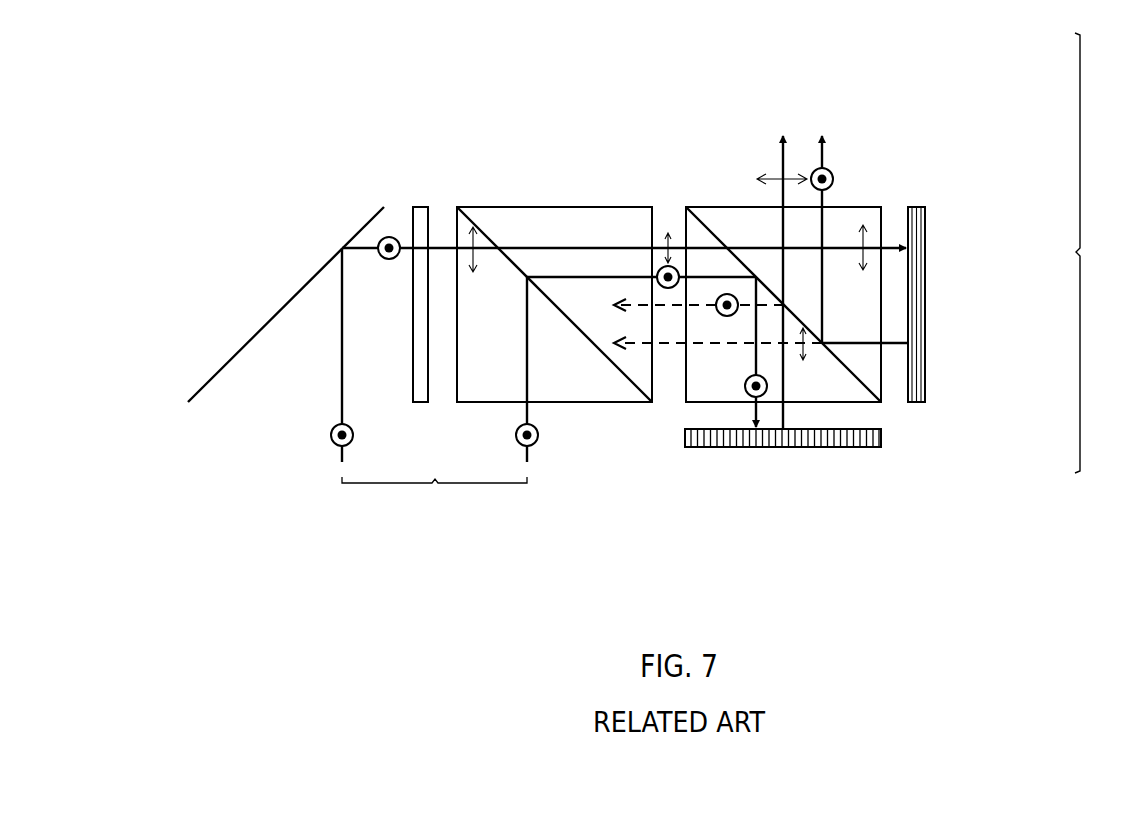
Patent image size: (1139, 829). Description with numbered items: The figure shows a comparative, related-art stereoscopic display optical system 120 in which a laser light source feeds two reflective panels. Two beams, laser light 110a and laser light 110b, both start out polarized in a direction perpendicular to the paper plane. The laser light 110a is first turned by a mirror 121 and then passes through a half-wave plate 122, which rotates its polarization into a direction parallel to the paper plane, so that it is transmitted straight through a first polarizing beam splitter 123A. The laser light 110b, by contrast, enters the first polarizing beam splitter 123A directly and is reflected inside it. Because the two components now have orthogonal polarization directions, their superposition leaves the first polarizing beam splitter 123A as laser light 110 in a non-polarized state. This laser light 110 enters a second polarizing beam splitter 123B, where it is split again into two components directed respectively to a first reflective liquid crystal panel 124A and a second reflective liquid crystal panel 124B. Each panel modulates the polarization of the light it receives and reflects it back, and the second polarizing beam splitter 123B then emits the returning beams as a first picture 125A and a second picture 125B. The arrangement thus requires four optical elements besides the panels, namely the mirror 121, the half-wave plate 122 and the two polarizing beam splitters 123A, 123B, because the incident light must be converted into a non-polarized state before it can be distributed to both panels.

The laser light 110 is at (434, 499).
The laser light 110a is at (340, 400).
The laser light 110b is at (530, 412).
The stereoscopic display optical system 120 is at (1107, 253).
The mirror 121 is at (287, 302).
The λ/2 wave plate 122 is at (421, 206).
The first polarizing beam splitter 123A is at (553, 206).
The second polarizing beam splitter 123B is at (882, 222).
The first reflective liquid crystal panel 124A is at (851, 447).
The second reflective liquid crystal panel 124B is at (925, 317).
The first picture 125A is at (773, 265).
The second picture 125B is at (847, 222).